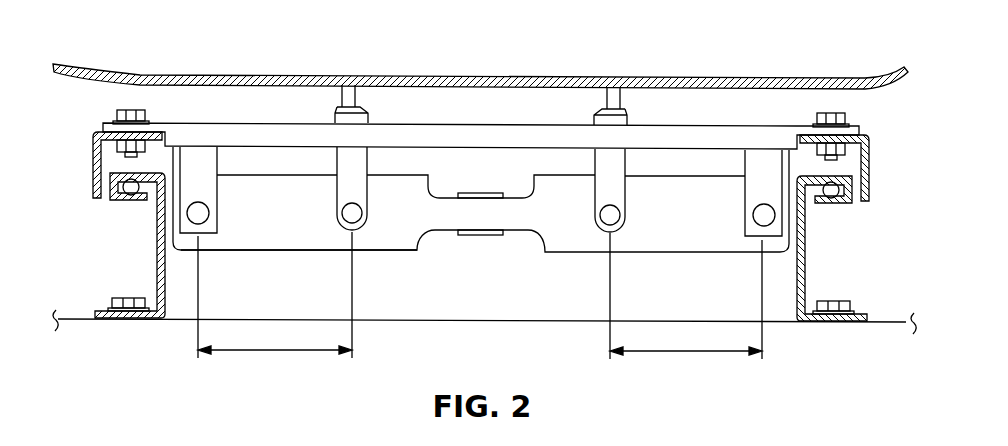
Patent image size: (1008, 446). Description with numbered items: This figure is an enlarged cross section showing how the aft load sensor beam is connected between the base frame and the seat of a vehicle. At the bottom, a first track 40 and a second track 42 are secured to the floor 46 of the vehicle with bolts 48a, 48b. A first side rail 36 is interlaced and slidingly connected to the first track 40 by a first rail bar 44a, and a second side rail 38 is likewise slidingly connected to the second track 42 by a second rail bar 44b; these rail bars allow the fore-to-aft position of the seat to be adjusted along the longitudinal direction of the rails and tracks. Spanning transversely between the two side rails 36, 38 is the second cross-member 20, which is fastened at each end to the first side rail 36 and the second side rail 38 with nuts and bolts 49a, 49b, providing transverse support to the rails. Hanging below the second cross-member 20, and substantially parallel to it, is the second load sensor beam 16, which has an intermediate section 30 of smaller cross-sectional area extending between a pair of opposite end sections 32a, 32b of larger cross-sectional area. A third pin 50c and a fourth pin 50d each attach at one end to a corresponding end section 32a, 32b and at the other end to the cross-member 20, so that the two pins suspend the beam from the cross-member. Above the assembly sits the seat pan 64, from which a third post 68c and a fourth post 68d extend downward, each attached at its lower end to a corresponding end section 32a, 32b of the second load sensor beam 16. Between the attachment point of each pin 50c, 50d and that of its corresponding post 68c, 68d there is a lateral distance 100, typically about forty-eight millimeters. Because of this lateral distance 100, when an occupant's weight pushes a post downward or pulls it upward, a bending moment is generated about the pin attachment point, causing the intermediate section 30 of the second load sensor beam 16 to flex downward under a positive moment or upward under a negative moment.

The second load sensor beam 16 is at (416, 243).
The second cross-member 20 is at (663, 133).
The intermediate section 30 is at (507, 222).
The end section 32a is at (247, 247).
The end section 32b is at (717, 248).
The first side rail 36 is at (90, 145).
The second side rail 38 is at (872, 148).
The first track 40 is at (157, 268).
The second track 42 is at (805, 272).
The first rail bar 44a is at (123, 188).
The second rail bar 44b is at (838, 189).
The floor 46 is at (887, 323).
The bolt 48a is at (110, 297).
The bolt 48b is at (853, 297).
The nut and bolt 49a is at (144, 115).
The nut and bolt 49b is at (818, 117).
The third pin 50c is at (217, 229).
The fourth pin 50d is at (743, 230).
The seat pan 64 is at (258, 75).
The third post 68c is at (338, 188).
The fourth post 68d is at (622, 187).
The lateral distance 100 is at (273, 352).